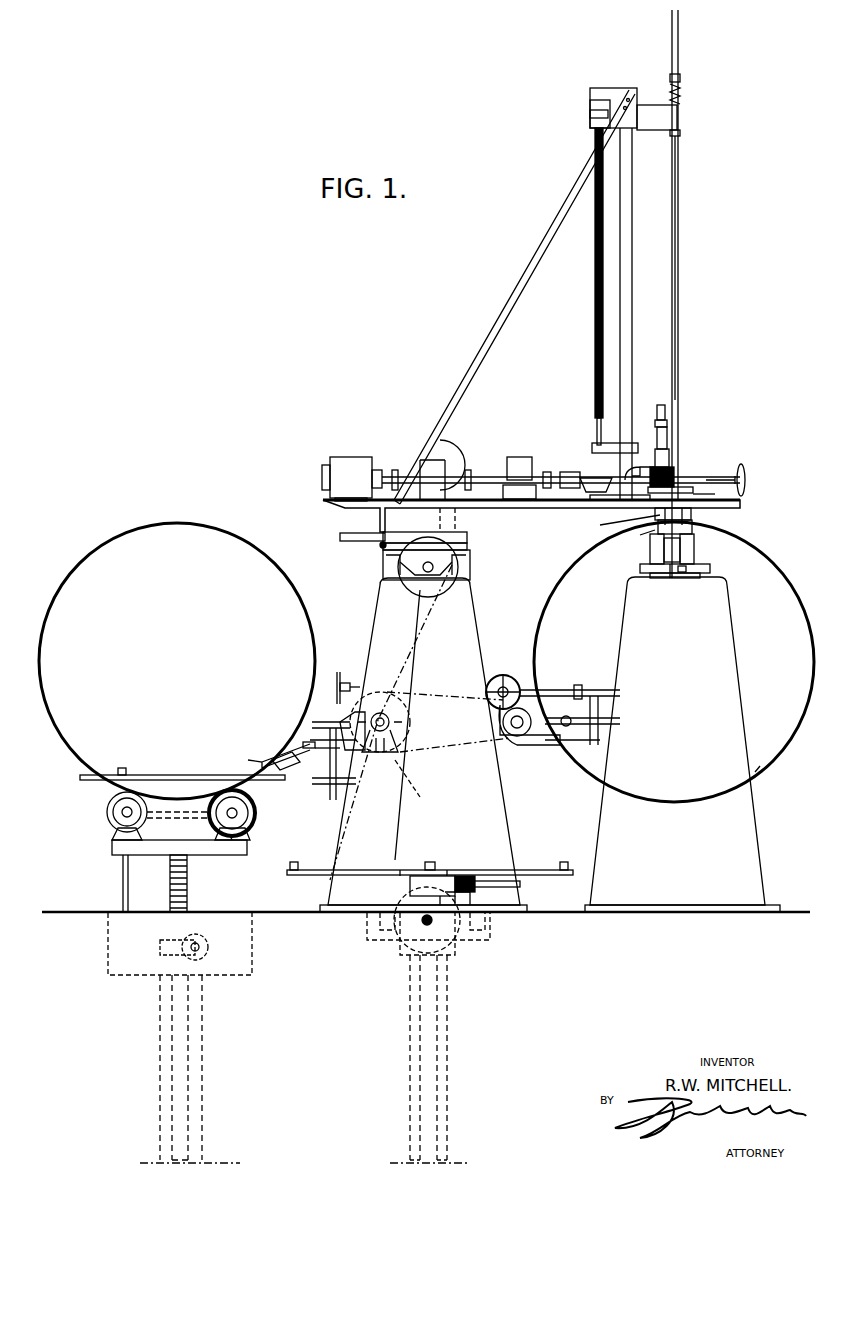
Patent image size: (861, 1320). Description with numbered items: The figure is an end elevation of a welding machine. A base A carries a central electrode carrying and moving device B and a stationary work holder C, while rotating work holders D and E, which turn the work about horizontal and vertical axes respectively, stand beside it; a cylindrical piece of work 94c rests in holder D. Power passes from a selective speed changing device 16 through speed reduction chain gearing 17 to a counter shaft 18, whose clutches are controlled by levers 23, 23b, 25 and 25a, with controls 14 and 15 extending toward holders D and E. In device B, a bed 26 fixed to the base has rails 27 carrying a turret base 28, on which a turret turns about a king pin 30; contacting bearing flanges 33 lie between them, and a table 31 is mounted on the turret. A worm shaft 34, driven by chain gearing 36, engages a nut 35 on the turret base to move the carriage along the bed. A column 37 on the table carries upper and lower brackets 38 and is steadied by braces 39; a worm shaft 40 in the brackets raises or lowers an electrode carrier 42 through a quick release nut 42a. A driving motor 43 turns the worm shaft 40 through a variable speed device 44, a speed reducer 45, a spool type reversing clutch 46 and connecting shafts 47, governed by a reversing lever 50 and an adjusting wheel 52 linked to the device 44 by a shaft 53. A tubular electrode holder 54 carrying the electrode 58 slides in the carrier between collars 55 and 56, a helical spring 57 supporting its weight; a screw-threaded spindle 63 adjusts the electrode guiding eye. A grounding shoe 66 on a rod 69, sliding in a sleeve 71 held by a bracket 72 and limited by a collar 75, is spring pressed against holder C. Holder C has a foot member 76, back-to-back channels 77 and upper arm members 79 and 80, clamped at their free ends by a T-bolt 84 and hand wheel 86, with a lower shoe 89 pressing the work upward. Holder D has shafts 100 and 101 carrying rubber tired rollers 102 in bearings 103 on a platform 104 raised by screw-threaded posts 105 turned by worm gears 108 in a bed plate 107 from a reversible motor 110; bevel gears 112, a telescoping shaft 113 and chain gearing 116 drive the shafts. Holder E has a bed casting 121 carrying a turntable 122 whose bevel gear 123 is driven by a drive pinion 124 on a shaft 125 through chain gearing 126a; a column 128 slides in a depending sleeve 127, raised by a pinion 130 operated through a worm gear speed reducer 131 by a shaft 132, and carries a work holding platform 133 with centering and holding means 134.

The rotating work holder D is at (177, 661).
The stationary work holder C is at (674, 662).
The base A is at (510, 852).
The central electrode carrying and moving device B is at (600, 448).
The rotating work holder E is at (438, 868).
The wheel rim 94c is at (760, 766).
The stud or king pin 30 is at (345, 520).
The table 31 is at (525, 508).
The bearing flanges 33 is at (470, 537).
The nut 35 is at (383, 543).
The turret base 28 is at (385, 556).
The guides or rails 27 is at (386, 560).
The bed 26 is at (470, 573).
The worm shaft 34 is at (458, 580).
The complementary shoe 89 is at (640, 535).
The shoe 66 is at (600, 525).
The driving motor 43 is at (346, 460).
The variable speed device 44 is at (440, 460).
The shaft 53 is at (490, 478).
The speed reducer 45 is at (523, 457).
The connecting shafts 47 is at (548, 472).
The spool type reversing clutch 46 is at (590, 478).
The worm shaft 40 is at (595, 332).
The column 37 is at (632, 332).
The electrode 58 is at (678, 332).
The tubular electrode holder 54 is at (678, 208).
The upper and lower brackets 38 is at (617, 88).
The quick release nut 42a is at (590, 117).
The electrode carrier 42 is at (672, 117).
The adjustable collar 55 is at (680, 78).
The helical spring 57 is at (680, 98).
The adjustable collar 56 is at (680, 135).
The braces 39 is at (461, 380).
The rod 69 is at (666, 410).
The collar 75 is at (668, 424).
The sleeve 71 is at (666, 440).
The bracket 72 is at (666, 455).
The reversing lever 50 is at (672, 478).
The controlling and adjusting wheel 52 is at (742, 462).
The screw-threaded spindle 63 is at (700, 498).
The upper arm member 80 is at (695, 520).
The upper arm member 79 is at (660, 516).
The channels 77 is at (655, 549).
The foot member 76 is at (710, 567).
The hand wheel 86 is at (683, 578).
The T-bolt 84 is at (673, 580).
The counter shaft 18 is at (392, 724).
The speed reduction chain gearing 36 is at (416, 656).
The speed reduction chain gearing 17 is at (455, 694).
The control 15 is at (505, 675).
The selective speed changing device 16 is at (540, 740).
The lever 23 is at (592, 722).
The control 14 is at (340, 685).
The lever 23b is at (330, 722).
The lever 25a is at (307, 745).
The telescoping shaft 113 is at (275, 755).
The bevel gears 112 is at (242, 792).
The rubber tired rollers 102 is at (220, 795).
The lever 25 is at (80, 777).
The shaft 101 is at (110, 816).
The bearings 103 is at (110, 832).
The platform 104 is at (112, 848).
The chain gearing 116 is at (177, 815).
The shaft 100 is at (245, 825).
The screw-threaded posts 105 is at (170, 882).
The work centering and holding means 134 is at (293, 862).
The work holding platform 133 is at (400, 870).
The worm gear speed reducer 131 is at (445, 870).
The chain gearing 126a is at (420, 797).
The pinion 130 is at (460, 878).
The shaft 132 is at (520, 885).
The turntable 122 is at (395, 913).
The bed casting 121 is at (490, 940).
The bevel gear 123 is at (405, 940).
The shaft 125 is at (445, 935).
The drive pinion 124 is at (440, 950).
The depending sleeve 127 is at (440, 960).
The column 128 is at (447, 1058).
The worm gears 108 is at (160, 945).
The reversible motor 110 is at (205, 940).
The bed plate 107 is at (140, 975).